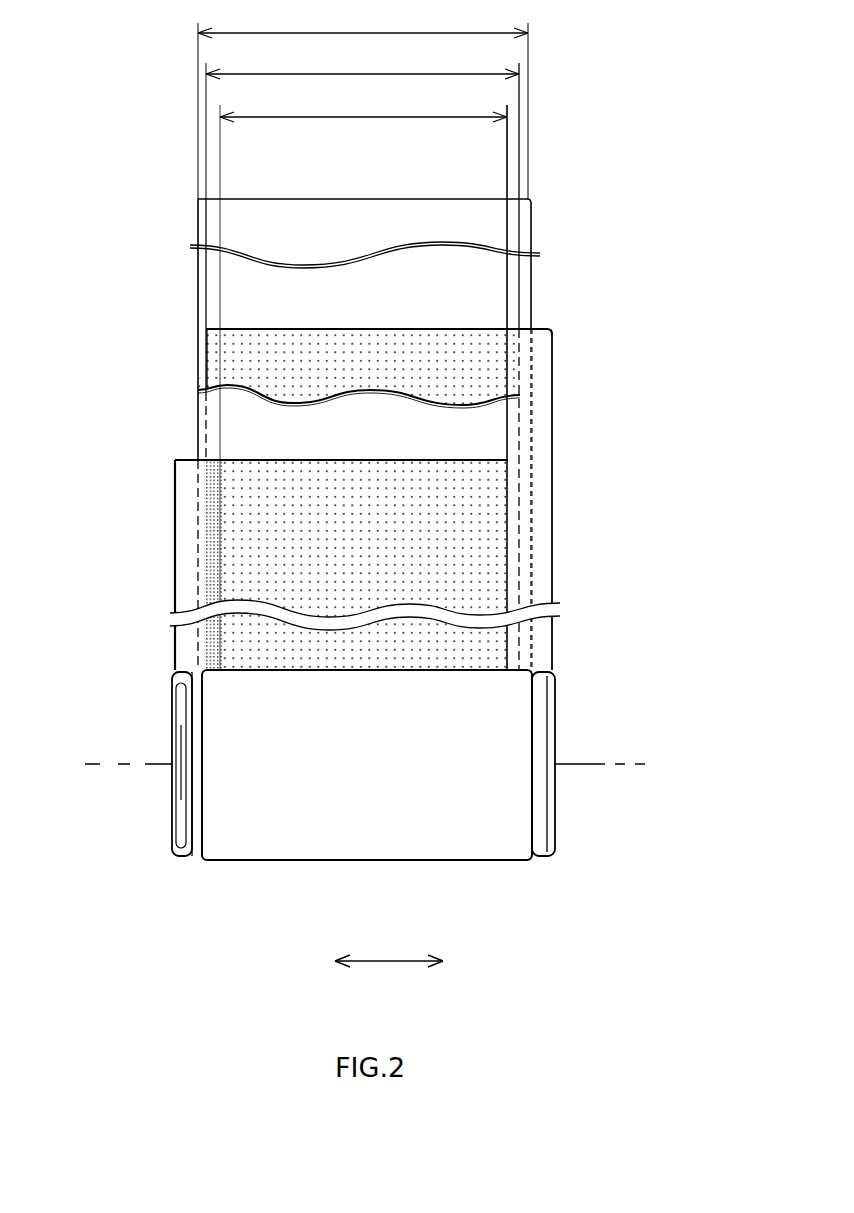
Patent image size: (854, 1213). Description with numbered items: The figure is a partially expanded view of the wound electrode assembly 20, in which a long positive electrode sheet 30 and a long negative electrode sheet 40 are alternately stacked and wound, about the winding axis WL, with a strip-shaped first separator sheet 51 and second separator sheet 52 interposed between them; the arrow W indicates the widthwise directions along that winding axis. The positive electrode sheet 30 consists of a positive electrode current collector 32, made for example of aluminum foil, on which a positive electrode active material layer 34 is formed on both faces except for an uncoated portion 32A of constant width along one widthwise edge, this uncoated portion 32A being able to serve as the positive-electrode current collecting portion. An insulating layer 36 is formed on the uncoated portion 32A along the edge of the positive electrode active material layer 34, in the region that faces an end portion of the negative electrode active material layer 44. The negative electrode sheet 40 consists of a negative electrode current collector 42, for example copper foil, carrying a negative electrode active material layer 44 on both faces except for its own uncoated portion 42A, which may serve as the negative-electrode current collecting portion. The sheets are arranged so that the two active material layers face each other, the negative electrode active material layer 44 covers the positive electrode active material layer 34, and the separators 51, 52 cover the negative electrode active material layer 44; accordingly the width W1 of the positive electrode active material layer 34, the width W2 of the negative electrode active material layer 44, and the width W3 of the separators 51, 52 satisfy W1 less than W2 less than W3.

The electrode assembly 20 is at (586, 184).
The positive electrode sheet 30 is at (514, 578).
The positive electrode current collector 32 is at (174, 482).
The uncoated portion 32A is at (185, 598).
The positive electrode active material layer 34 is at (250, 555).
The insulating layer 36 is at (212, 574).
The negative electrode sheet 40 is at (553, 405).
The negative electrode current collector 42 is at (553, 505).
The uncoated portion 42A is at (540, 453).
The negative electrode active material layer 44 is at (455, 358).
The first separator sheet 51 is at (197, 412).
The second separator sheet 52 is at (197, 300).
The arrow W is at (389, 975).
The width W1 is at (363, 107).
The width W2 is at (362, 125).
The width W3 is at (363, 104).
The winding axis WL is at (636, 764).